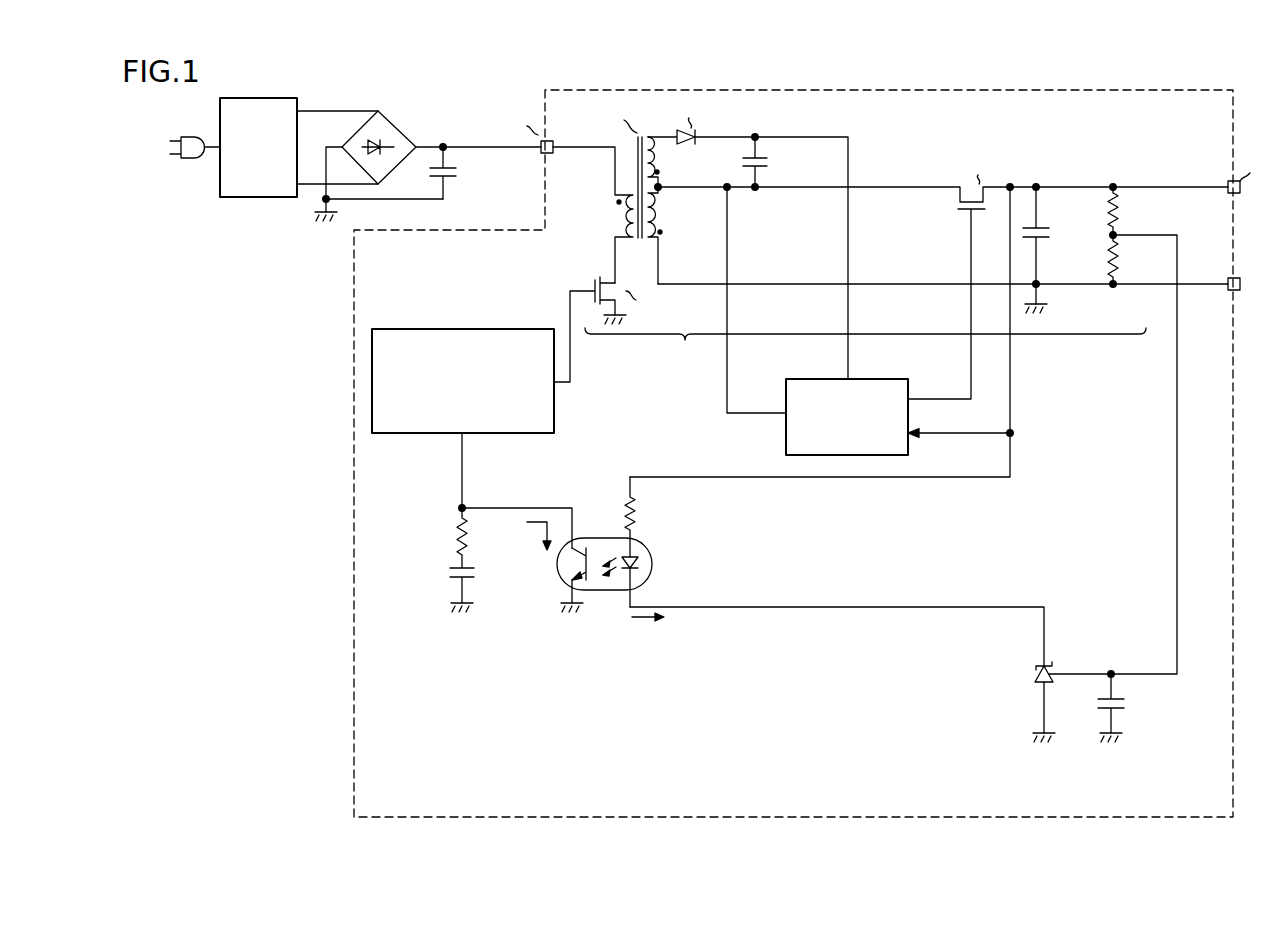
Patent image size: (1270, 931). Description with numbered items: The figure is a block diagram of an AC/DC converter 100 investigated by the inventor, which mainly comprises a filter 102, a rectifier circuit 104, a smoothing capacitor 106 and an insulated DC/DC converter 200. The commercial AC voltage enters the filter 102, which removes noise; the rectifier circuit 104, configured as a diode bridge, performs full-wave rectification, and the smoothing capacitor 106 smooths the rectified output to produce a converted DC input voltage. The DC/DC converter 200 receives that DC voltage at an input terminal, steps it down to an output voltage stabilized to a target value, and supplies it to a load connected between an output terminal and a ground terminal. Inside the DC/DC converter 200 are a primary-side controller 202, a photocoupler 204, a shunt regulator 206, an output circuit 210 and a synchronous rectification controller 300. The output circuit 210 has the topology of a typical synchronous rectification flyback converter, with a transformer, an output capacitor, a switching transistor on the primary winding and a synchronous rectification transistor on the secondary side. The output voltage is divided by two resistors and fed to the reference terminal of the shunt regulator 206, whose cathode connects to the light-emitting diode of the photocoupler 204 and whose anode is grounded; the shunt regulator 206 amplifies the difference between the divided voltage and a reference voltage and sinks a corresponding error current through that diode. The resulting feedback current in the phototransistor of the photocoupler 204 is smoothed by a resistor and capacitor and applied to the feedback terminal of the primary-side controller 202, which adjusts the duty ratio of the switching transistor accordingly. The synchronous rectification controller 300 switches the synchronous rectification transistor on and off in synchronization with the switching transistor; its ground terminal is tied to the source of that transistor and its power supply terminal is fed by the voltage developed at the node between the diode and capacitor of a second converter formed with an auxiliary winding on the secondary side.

The AC/DC converter 100 is at (265, 803).
The filter 102 is at (250, 97).
The rectifier circuit 104 is at (394, 120).
The smoothing capacitor 106 is at (473, 173).
The DC/DC converter 200 is at (793, 440).
The primary-side controller 202 is at (482, 328).
The photocoupler 204 is at (600, 540).
The shunt regulator 206 is at (1011, 697).
The output circuit 210 is at (865, 349).
The synchronous rectification controller 300 is at (786, 436).